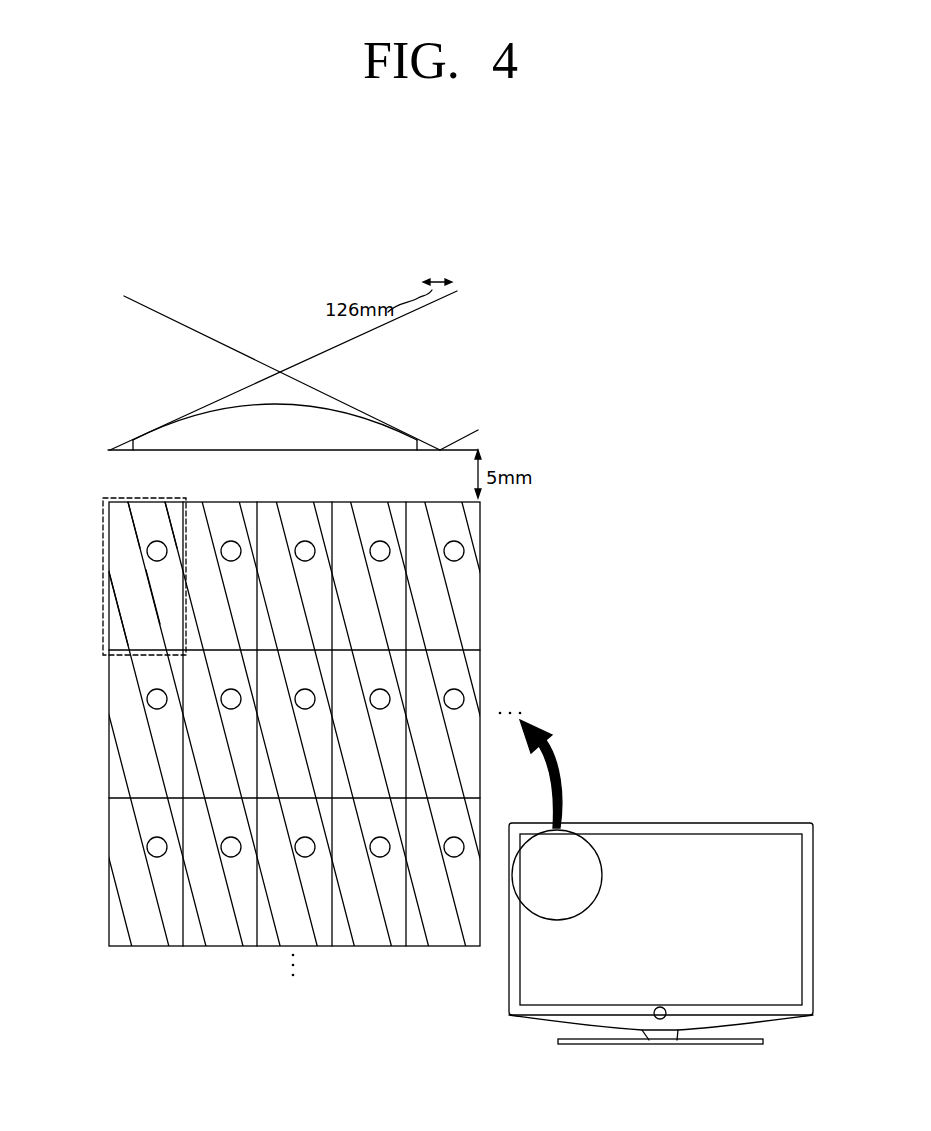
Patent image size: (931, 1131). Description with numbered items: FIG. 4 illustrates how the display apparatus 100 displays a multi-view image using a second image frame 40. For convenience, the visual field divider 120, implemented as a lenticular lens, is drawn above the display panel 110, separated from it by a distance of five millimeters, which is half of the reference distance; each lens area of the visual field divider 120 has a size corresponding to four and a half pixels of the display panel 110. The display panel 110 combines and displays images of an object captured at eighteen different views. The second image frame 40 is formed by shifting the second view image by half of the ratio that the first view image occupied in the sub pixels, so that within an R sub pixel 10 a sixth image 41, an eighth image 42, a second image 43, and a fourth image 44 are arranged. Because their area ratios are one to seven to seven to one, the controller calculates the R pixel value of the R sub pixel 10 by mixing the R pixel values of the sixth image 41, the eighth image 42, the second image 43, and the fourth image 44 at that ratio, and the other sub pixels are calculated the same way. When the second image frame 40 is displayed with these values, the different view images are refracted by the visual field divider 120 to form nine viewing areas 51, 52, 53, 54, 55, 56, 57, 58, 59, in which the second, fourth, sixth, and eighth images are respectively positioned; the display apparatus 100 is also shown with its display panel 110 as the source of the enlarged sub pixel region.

The viewing area 51 is at (457, 268).
The viewing area 52 is at (416, 268).
The viewing area 53 is at (374, 268).
The viewing area 54 is at (332, 268).
The viewing area 55 is at (291, 268).
The viewing area 56 is at (249, 268).
The viewing area 57 is at (207, 268).
The viewing area 58 is at (166, 268).
The viewing area 59 is at (124, 268).
The visual field divider 120 is at (125, 446).
The R sub pixel 10 is at (103, 532).
The second image frame 40 is at (108, 686).
The sixth image 41 is at (113, 625).
The eighth image 42 is at (130, 597).
The second image 43 is at (145, 498).
The fourth image 44 is at (175, 498).
The display apparatus 100 is at (663, 822).
The display panel 110 is at (724, 833).